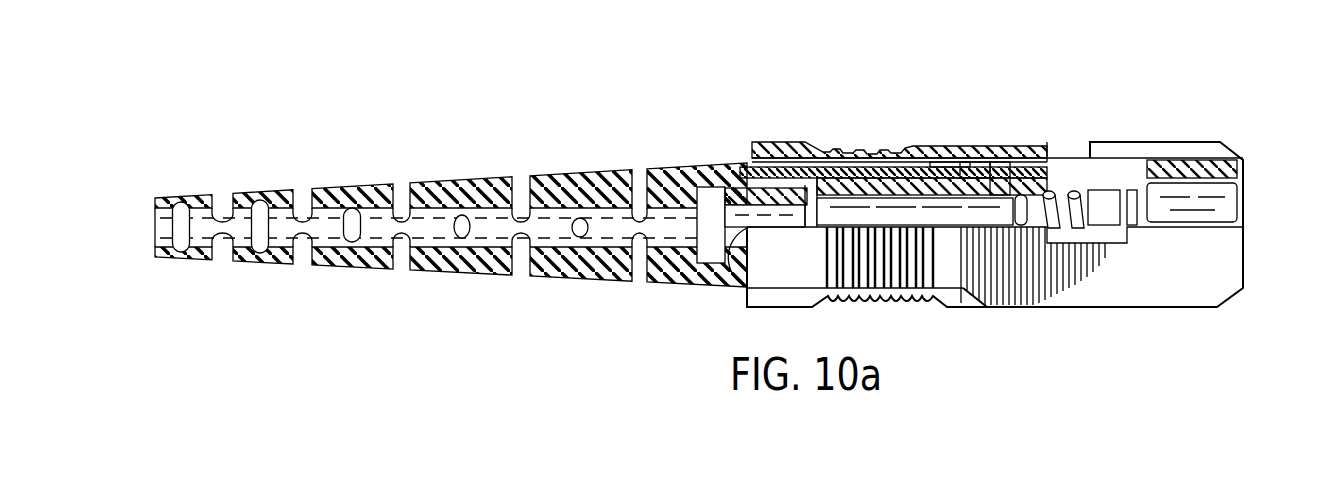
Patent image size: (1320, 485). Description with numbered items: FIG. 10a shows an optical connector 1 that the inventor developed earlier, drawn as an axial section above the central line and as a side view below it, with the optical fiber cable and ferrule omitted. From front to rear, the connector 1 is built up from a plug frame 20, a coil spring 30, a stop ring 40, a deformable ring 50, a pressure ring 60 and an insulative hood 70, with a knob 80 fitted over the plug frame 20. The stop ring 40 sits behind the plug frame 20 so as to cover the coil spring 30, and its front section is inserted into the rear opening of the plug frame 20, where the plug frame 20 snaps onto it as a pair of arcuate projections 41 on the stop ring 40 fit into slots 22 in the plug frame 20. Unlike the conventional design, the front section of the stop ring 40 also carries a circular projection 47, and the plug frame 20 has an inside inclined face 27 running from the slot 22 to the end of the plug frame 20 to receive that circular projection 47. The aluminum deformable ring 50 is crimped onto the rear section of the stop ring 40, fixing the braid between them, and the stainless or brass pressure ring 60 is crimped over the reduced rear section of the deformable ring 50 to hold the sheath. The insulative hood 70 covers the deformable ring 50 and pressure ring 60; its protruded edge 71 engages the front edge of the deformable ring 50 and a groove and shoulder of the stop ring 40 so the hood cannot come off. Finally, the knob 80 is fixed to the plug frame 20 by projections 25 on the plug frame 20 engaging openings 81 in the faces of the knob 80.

The connector 1 is at (618, 315).
The plug frame 20 is at (1177, 158).
The slot 22 is at (995, 185).
The projection 25 is at (1083, 190).
The inside inclined face 27 is at (966, 172).
The coil spring 30 is at (1075, 190).
The stop ring 40 is at (920, 172).
The arcuate projection 41 is at (990, 175).
The circular projection 47 is at (940, 165).
The deformable ring 50 is at (813, 175).
The pressure ring 60 is at (753, 187).
The insulative hood 70 is at (703, 182).
The protruded edge 71 is at (896, 185).
The knob 80 is at (1237, 158).
The opening 81 is at (1095, 158).